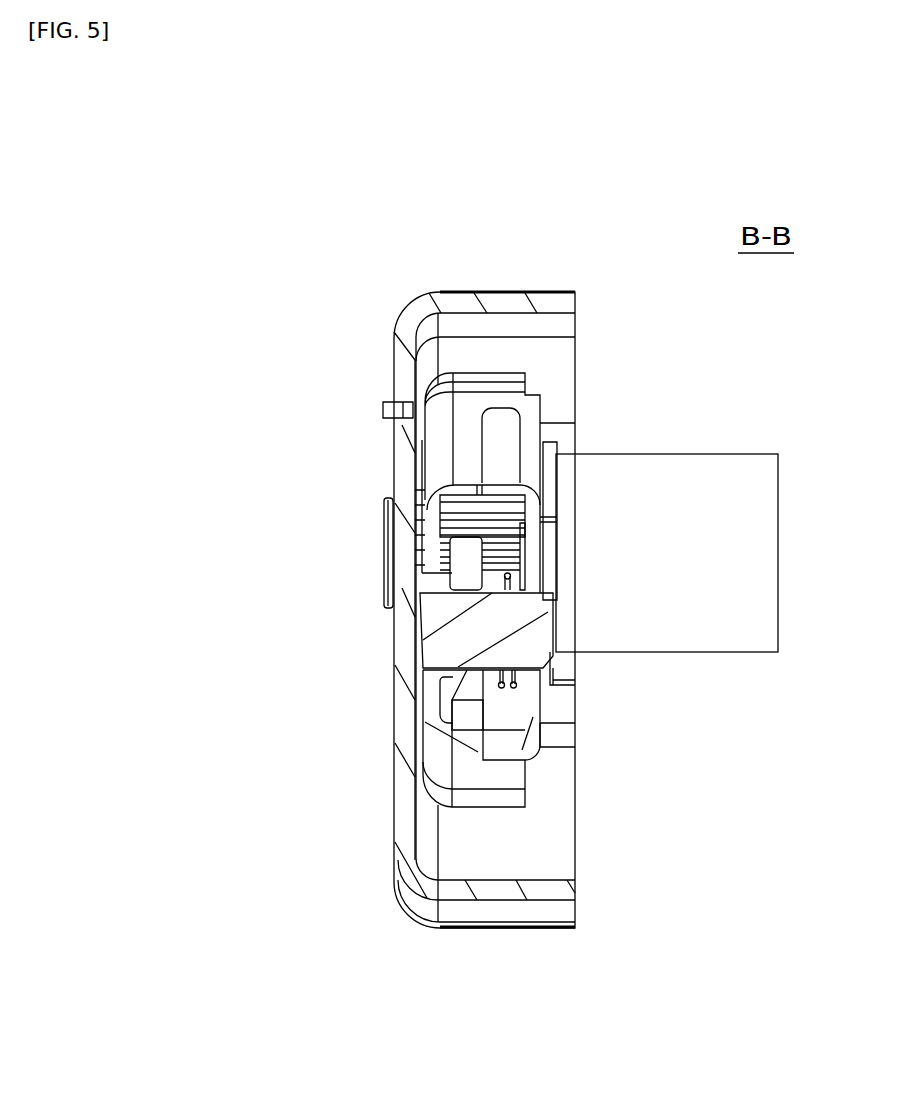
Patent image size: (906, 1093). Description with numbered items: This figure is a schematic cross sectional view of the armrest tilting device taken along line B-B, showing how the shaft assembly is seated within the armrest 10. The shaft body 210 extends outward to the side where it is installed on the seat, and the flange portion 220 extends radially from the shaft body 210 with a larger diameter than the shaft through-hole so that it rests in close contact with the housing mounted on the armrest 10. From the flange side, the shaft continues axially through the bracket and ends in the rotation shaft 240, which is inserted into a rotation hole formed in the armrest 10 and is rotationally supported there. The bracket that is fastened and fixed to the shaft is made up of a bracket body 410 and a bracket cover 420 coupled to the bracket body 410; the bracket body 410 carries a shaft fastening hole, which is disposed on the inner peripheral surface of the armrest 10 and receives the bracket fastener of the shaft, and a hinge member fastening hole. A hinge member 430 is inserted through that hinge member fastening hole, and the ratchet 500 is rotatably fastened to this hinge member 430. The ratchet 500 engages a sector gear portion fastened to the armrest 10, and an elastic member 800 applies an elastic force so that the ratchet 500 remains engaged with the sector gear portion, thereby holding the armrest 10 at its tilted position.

The armrest 10 is at (505, 300).
The shaft body 210 is at (698, 474).
The flange portion 220 is at (547, 450).
The rotation shaft 240 is at (386, 558).
The bracket body 410 is at (453, 740).
The bracket cover 420 is at (533, 710).
The hinge member 430 is at (460, 637).
The ratchet 500 is at (462, 575).
The elastic member 800 is at (550, 668).